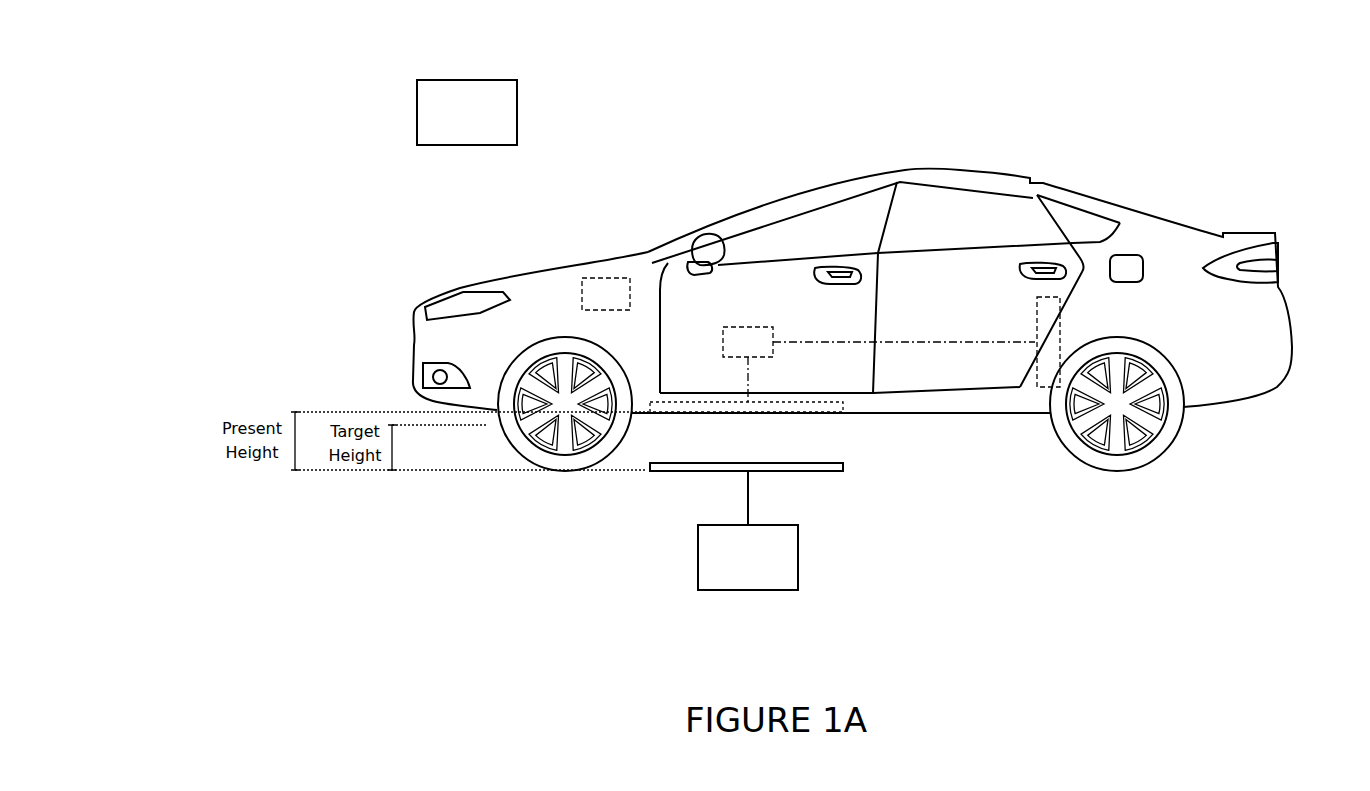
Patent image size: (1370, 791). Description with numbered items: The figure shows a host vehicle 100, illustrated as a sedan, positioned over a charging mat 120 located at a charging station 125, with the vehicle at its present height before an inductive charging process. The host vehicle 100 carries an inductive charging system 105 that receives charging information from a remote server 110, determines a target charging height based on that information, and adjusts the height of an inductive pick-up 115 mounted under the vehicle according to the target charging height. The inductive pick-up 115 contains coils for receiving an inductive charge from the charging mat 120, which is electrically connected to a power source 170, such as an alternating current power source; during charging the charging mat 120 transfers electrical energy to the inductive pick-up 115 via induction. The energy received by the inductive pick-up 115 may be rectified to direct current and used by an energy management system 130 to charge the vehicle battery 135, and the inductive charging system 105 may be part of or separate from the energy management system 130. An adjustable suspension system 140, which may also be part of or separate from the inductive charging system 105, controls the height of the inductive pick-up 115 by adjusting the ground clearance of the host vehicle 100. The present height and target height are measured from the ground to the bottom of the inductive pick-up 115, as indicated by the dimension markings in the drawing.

The host vehicle 100 is at (907, 170).
The inductive charging system 105 is at (818, 418).
The remote server 110 is at (517, 110).
The inductive pick-up 115 is at (707, 413).
The charging mat 120 is at (805, 472).
The charging station 125 is at (683, 507).
The energy management system 130 is at (879, 364).
The vehicle battery 135 is at (1037, 320).
The adjustable suspension system 140 is at (606, 294).
The power source 170 is at (798, 552).